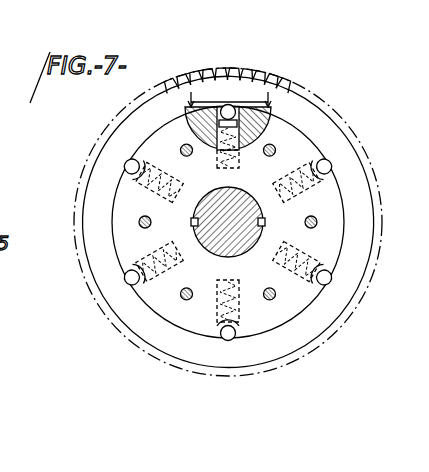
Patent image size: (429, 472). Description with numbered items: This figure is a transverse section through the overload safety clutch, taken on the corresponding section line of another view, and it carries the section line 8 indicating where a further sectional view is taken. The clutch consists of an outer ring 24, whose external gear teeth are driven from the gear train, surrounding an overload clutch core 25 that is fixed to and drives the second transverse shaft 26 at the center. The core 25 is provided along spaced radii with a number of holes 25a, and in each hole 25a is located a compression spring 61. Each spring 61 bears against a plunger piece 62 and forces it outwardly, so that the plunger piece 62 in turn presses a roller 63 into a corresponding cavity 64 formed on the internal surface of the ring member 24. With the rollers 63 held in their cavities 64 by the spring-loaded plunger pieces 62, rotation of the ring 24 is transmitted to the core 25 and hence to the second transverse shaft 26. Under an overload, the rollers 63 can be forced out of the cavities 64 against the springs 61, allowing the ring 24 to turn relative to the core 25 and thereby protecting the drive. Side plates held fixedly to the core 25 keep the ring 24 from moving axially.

The section line 8— 8 is at (222, 94).
The ring 24 is at (357, 170).
The overload clutch core 25 is at (333, 200).
The holes 25a is at (158, 183).
The second transverse shaft 26 is at (218, 198).
The compression spring 61 is at (272, 132).
The plunger piece 62 is at (192, 117).
The roller 63 is at (228, 104).
The cavity 64 is at (330, 160).